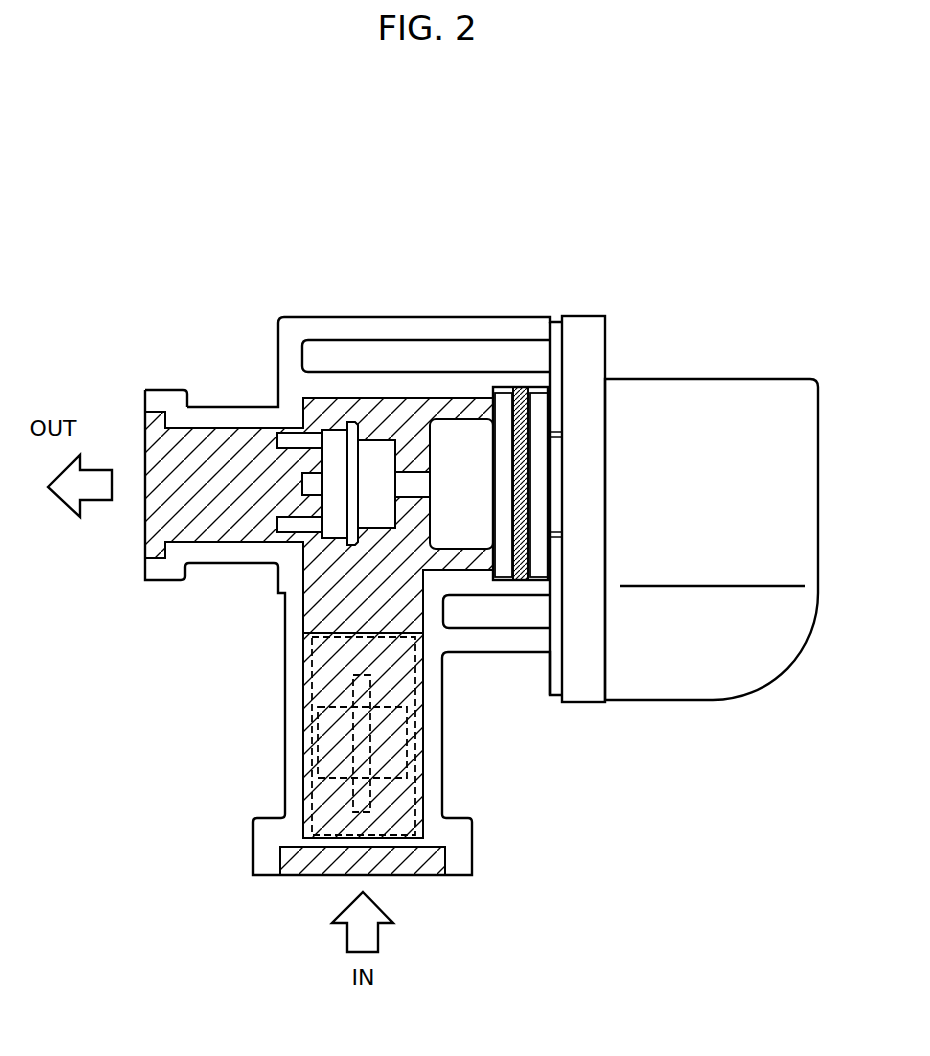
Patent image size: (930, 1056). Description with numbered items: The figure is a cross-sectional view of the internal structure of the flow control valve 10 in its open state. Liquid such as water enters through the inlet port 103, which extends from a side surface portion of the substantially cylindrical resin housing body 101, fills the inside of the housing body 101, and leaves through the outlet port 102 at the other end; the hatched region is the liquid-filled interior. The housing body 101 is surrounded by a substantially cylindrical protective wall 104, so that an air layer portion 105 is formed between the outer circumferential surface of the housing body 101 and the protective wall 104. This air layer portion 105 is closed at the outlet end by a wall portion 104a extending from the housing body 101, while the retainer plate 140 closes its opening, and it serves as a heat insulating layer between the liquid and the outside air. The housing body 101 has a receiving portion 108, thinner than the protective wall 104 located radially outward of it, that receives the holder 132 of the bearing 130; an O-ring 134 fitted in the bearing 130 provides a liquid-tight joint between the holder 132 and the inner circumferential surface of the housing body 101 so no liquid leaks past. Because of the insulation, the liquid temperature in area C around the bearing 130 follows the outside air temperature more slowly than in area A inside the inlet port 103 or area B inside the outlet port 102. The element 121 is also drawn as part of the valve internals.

The flow control valve 10 is at (699, 196).
The housing body 101 is at (388, 372).
The outlet port 102 is at (237, 407).
The inlet port 103 is at (283, 683).
The protective wall 104 is at (308, 317).
The wall portion 104a is at (307, 355).
The air layer portion 105 is at (430, 353).
The receiving portion 108 is at (527, 378).
The bushing 121 is at (330, 545).
The bearing 130 is at (445, 400).
The holder 132 is at (462, 570).
The O-ring 134 is at (517, 580).
The retainer plate 140 is at (550, 672).
The area A is at (337, 813).
The area B is at (212, 473).
The area C is at (468, 412).